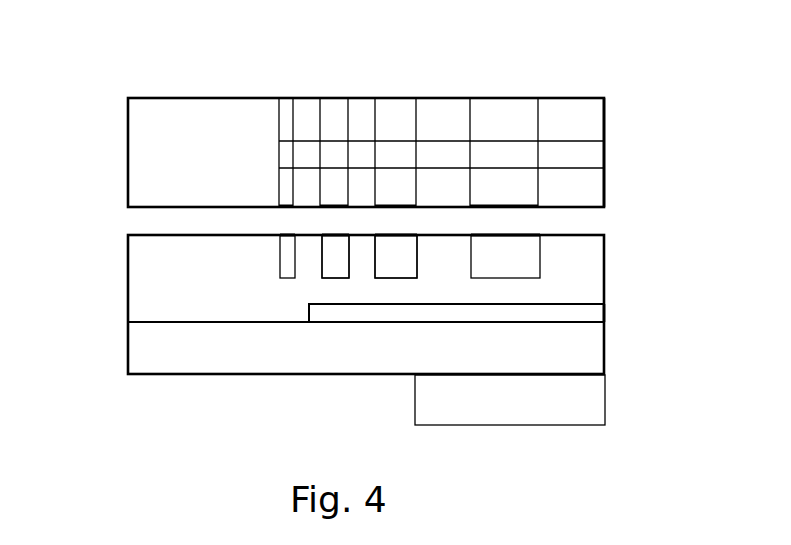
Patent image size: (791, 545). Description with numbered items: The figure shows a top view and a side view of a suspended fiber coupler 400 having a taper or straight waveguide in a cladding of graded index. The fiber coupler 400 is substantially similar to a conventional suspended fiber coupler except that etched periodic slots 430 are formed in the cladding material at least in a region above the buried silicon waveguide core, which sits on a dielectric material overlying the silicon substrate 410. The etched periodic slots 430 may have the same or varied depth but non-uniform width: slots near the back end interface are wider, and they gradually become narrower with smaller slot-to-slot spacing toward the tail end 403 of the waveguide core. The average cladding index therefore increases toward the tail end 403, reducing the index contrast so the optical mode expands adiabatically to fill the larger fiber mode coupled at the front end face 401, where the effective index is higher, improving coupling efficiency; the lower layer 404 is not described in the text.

The fiber coupler 400 is at (103, 62).
The front end face 401 is at (128, 152).
The tail end 403 is at (278, 157).
The base substrate 404 is at (226, 342).
The silicon substrate 410 is at (510, 400).
The etched periodic slots 430 is at (418, 247).